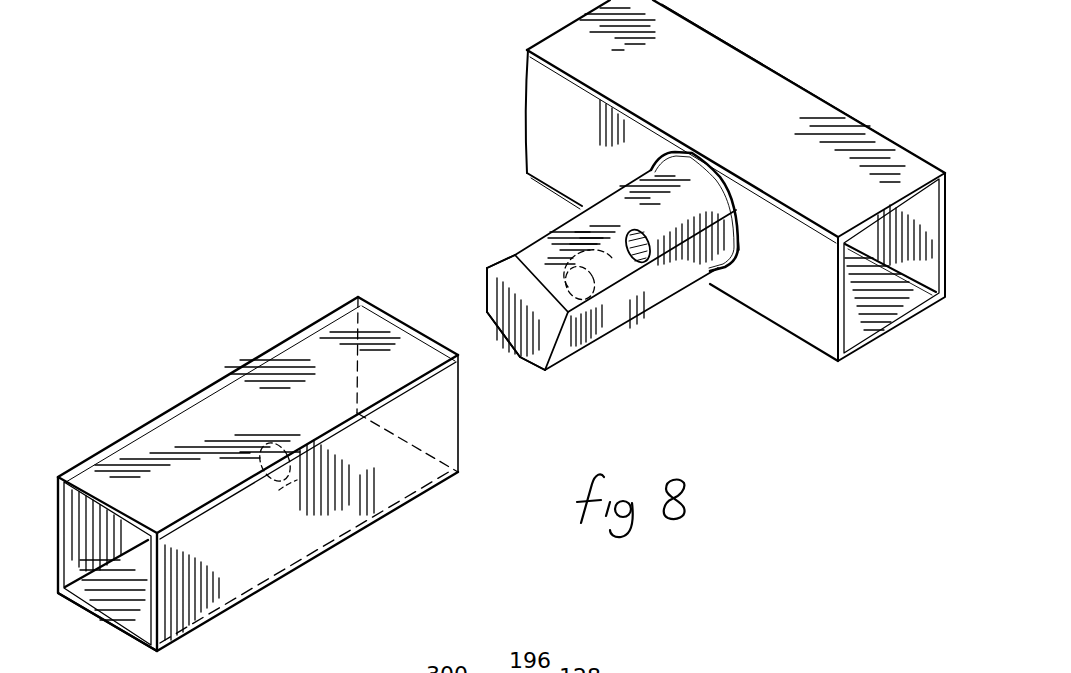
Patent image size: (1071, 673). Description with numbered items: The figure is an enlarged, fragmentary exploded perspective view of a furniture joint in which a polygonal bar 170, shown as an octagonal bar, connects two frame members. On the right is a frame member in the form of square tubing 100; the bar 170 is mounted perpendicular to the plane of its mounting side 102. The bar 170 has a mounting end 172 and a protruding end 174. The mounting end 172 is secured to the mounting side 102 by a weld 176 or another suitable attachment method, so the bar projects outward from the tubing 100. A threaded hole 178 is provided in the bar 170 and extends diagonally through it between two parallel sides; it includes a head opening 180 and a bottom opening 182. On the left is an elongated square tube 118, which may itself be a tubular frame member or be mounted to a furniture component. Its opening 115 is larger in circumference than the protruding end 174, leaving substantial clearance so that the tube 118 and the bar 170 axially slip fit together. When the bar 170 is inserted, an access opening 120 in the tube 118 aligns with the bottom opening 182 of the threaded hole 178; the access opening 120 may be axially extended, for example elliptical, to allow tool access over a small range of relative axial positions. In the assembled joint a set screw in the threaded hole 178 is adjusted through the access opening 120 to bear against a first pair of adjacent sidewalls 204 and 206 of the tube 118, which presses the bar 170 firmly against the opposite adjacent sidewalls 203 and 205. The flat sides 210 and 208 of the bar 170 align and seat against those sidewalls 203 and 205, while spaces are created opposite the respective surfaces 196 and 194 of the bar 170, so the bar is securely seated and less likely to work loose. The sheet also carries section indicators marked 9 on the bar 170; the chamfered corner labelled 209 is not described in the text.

The square tubing 100 is at (745, 73).
The mounting side 102 is at (580, 139).
The square tube 118 is at (331, 305).
The access opening 120 is at (288, 479).
The opening 115 is at (153, 607).
The sidewall 203 is at (53, 512).
The sidewall 204 is at (285, 366).
The sidewall 205 is at (98, 609).
The sidewall 206 is at (378, 483).
The polygonal bar 170 is at (557, 374).
The mounting end 172 is at (728, 238).
The protruding end 174 is at (486, 289).
The weld 176 is at (727, 186).
The threaded hole 178 is at (583, 256).
The head opening 180 is at (648, 336).
The bottom opening 182 is at (628, 270).
The surface 194 is at (639, 265).
The surface 196 is at (566, 233).
The flat side 208 is at (519, 357).
The chamfered corner of connector 209 is at (492, 334).
The flat side 210 is at (495, 288).
The section line 9- 9 is at (618, 220).